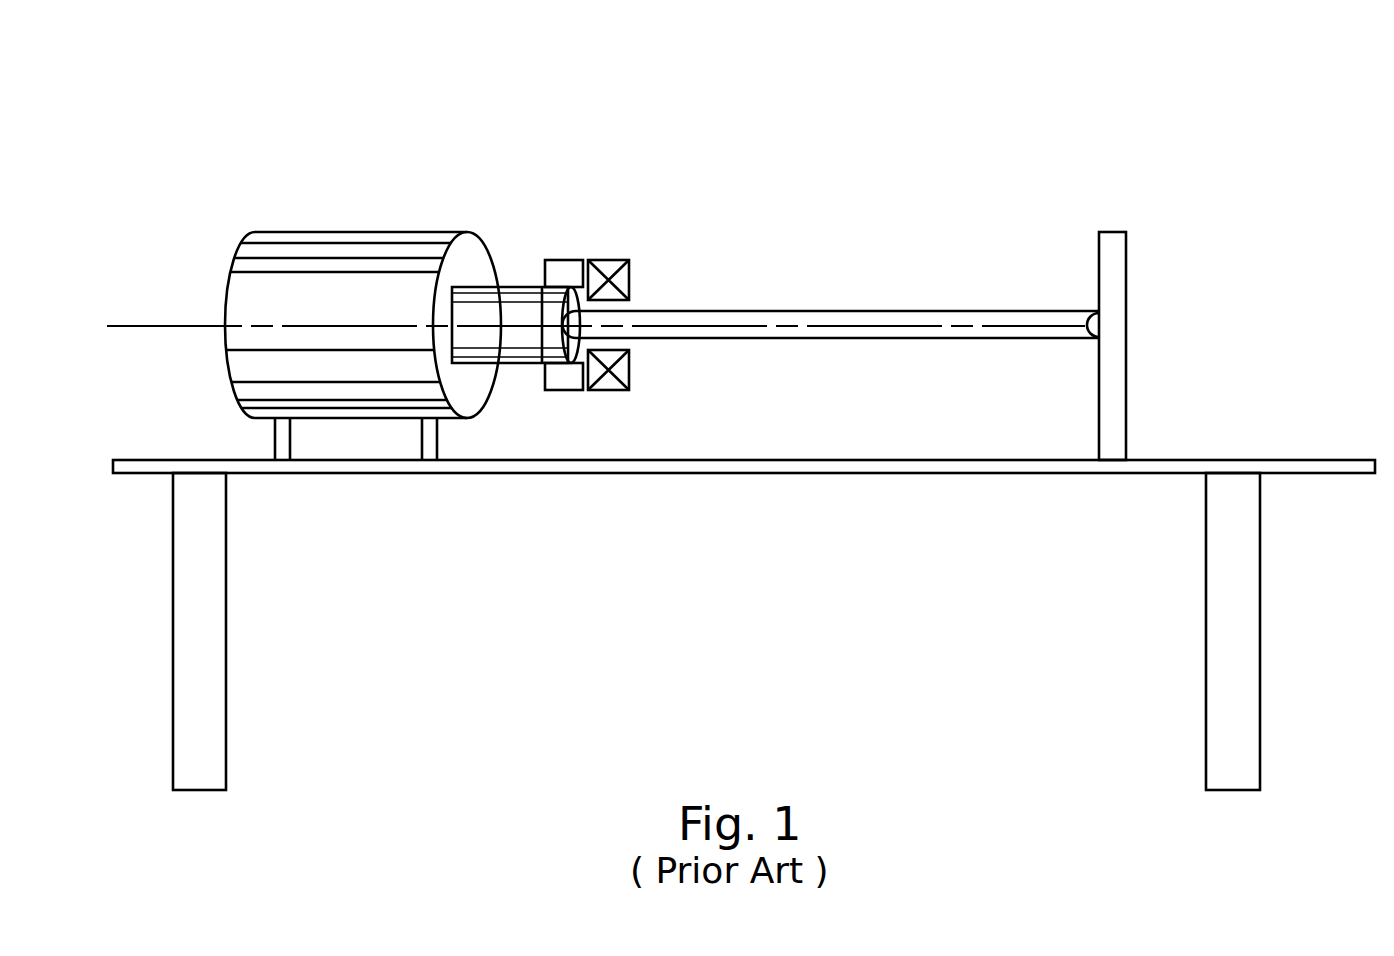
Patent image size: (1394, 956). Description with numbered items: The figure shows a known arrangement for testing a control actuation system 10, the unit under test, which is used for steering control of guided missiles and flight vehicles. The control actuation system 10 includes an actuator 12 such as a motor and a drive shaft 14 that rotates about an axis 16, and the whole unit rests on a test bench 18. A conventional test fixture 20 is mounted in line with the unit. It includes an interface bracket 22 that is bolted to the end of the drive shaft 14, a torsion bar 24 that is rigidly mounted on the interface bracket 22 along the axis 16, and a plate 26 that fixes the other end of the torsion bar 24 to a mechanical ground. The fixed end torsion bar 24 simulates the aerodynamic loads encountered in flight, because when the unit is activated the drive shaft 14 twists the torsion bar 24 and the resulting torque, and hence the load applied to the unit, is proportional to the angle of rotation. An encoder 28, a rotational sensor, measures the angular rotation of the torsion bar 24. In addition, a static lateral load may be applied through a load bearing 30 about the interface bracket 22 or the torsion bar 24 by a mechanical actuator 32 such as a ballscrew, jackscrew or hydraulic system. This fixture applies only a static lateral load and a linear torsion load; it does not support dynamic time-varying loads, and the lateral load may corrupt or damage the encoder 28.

The control actuation system (CAS) 10 is at (342, 286).
The actuator 12 is at (355, 255).
The drive shaft 14 is at (516, 319).
The axis 16 is at (140, 327).
The test bench 18 is at (1183, 470).
The test fixture 20 is at (1053, 168).
The interface bracket 22 is at (550, 337).
The torsion bar 24 is at (807, 310).
The plate 26 is at (1127, 265).
The encoder 28 is at (605, 259).
The load bearing 30 is at (568, 390).
The mechanical actuator 32 is at (565, 259).